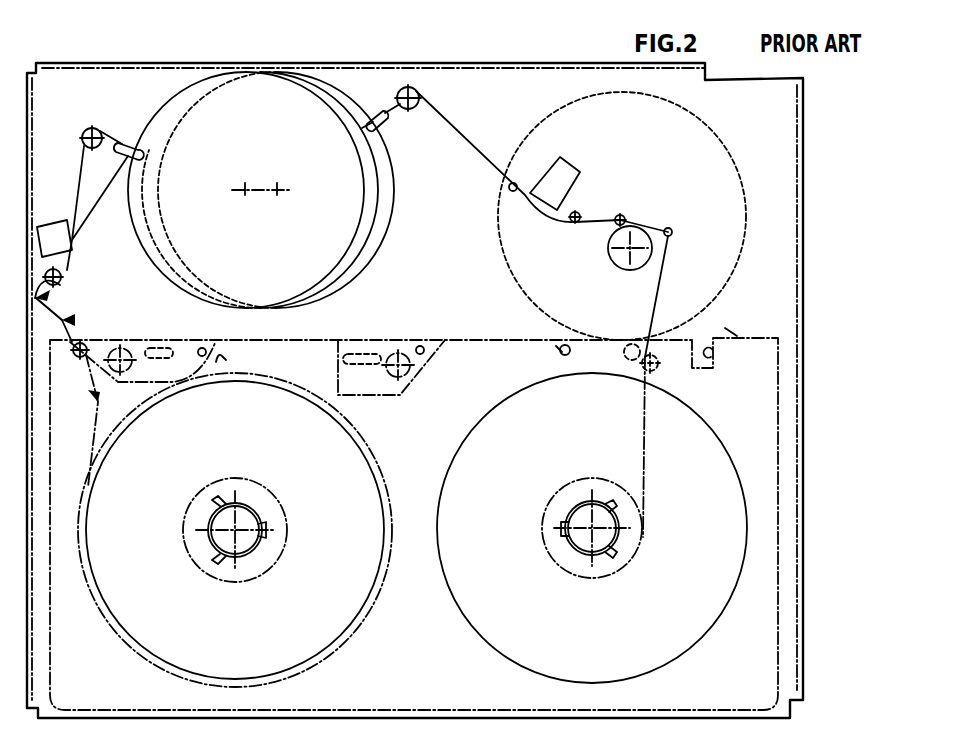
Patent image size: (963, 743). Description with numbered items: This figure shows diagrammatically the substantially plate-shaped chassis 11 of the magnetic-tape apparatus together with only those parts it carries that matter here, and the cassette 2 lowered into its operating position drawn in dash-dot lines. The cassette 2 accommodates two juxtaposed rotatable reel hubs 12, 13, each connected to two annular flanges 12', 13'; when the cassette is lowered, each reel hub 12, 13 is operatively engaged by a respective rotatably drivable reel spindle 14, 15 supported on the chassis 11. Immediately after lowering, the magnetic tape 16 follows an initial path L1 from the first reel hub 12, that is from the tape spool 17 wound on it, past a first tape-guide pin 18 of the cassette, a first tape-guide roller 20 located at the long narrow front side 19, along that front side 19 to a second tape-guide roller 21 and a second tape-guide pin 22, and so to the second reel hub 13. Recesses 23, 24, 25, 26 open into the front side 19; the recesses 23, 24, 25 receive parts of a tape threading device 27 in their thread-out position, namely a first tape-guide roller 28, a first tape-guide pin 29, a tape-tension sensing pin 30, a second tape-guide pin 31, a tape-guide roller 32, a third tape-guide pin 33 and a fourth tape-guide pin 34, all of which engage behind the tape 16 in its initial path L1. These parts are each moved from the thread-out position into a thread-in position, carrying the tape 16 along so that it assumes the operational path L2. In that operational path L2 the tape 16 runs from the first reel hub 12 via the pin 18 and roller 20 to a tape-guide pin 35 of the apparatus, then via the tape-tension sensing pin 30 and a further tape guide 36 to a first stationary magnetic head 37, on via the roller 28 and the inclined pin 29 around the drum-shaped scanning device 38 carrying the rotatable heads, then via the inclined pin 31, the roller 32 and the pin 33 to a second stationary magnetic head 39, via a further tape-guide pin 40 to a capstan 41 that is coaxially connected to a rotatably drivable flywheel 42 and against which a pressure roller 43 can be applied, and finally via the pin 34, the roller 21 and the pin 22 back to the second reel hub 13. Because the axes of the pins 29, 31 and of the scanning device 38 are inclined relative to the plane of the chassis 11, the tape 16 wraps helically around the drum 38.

The cassette 2 is at (737, 336).
The chassis 11 is at (503, 78).
The first reel hub 12 is at (249, 527).
The annular flange 12' is at (377, 631).
The second reel hub 13 is at (579, 525).
The annular flange 13' is at (590, 528).
The reel spindle 14 is at (255, 545).
The reel spindle 15 is at (576, 545).
The magnetic tape 16 is at (92, 430).
The tape spool 17 is at (135, 628).
The first tape-guide pin 18 is at (92, 404).
The long narrow front side 19 is at (245, 341).
The first tape-guide roller 20 is at (80, 357).
The second tape-guide roller 21 is at (630, 345).
The second tape-guide pin 22 is at (656, 366).
The recess 23 is at (226, 360).
The recess 24 is at (380, 395).
The recess 25 is at (556, 348).
The recess 26 is at (714, 358).
The tape threading device 27 is at (89, 128).
The first tape-guide roller 28 is at (83, 133).
The first tape-guide pin 29 is at (127, 160).
The tape-tension sensing pin 30 is at (47, 297).
The second tape-guide pin 31 is at (383, 130).
The tape-guide roller 32 is at (415, 106).
The third tape-guide pin 33 is at (509, 188).
The fourth tape-guide pin 34 is at (673, 232).
The tape-guide pin 35 is at (68, 320).
The further tape guide 36 is at (65, 277).
The first stationary magnetic head 37 is at (67, 243).
The drum-shaped scanning device 38 is at (172, 109).
The second stationary magnetic head 39 is at (565, 165).
The further tape-guide pin 40 is at (578, 214).
The capstan 41 is at (621, 215).
The flywheel 42 is at (730, 145).
The pressure roller 43 is at (610, 255).
The initial path L1 is at (368, 340).
The operational path L2 is at (486, 156).